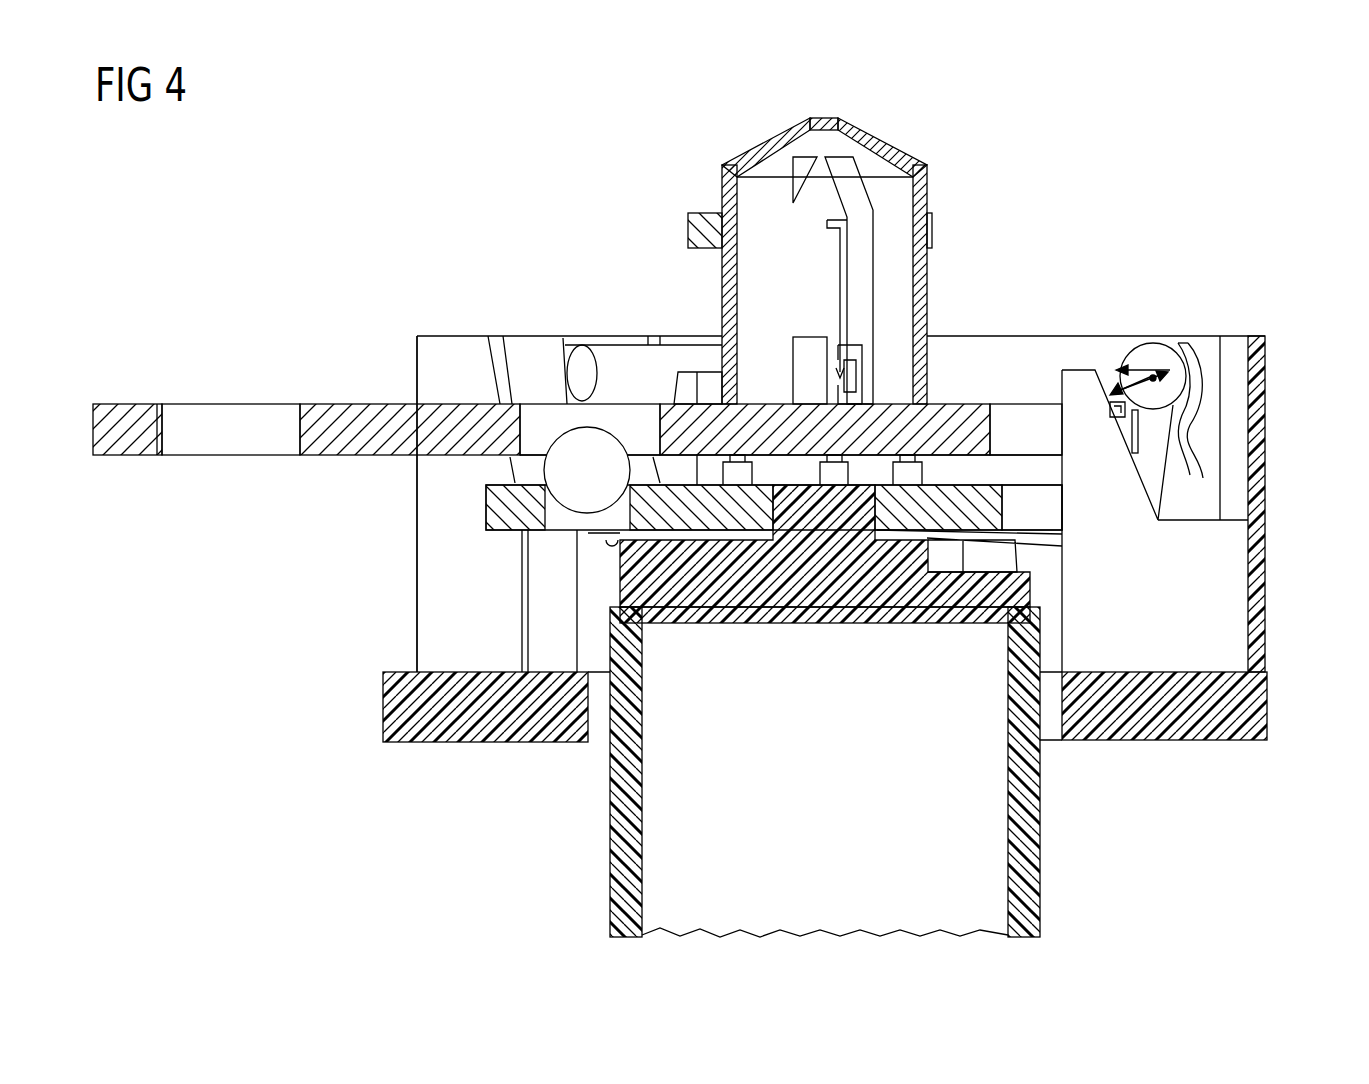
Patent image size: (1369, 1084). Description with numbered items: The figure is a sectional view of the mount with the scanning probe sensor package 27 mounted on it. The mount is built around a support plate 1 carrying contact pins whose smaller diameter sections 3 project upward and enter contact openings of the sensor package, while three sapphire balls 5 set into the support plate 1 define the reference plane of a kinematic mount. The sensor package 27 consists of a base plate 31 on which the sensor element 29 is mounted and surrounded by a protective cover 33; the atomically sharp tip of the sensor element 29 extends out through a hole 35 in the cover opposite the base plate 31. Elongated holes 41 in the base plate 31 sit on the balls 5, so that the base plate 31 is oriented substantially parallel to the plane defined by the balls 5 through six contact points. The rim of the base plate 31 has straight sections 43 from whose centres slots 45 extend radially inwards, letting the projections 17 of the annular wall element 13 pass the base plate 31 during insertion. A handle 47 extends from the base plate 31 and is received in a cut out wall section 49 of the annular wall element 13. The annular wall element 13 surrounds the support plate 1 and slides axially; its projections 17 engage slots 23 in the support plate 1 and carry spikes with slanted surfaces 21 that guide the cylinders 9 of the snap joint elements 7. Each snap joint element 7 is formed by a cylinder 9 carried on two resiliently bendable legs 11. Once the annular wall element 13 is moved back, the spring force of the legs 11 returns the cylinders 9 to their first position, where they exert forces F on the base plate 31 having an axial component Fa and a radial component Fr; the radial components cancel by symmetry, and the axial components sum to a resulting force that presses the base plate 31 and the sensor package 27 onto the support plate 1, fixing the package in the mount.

The support plate 1 is at (1007, 547).
The smaller diameter sections 3 is at (820, 472).
The ball 5 is at (575, 498).
The snap joint element 7 is at (1150, 414).
The cylinder 9 is at (617, 360).
The legs 11 is at (1188, 472).
The annular wall element 13 is at (1258, 467).
The projection 17 is at (1233, 568).
The slanted surface 21 is at (1111, 412).
The slot 23 is at (1040, 505).
The scanning probe sensor package 27 is at (688, 177).
The sensor element 29 is at (858, 258).
The base plate 31 is at (962, 410).
The protective cover 33 is at (929, 192).
The hole 35 is at (826, 119).
The elongated hole 41 is at (543, 418).
The straight section 43 is at (1131, 432).
The slot 45 is at (1028, 422).
The handle 47 is at (335, 415).
The cut out wall section 49 is at (440, 583).
The axial force component Fa is at (1113, 372).
The radial force component Fr is at (1147, 425).
The force F is at (1140, 416).